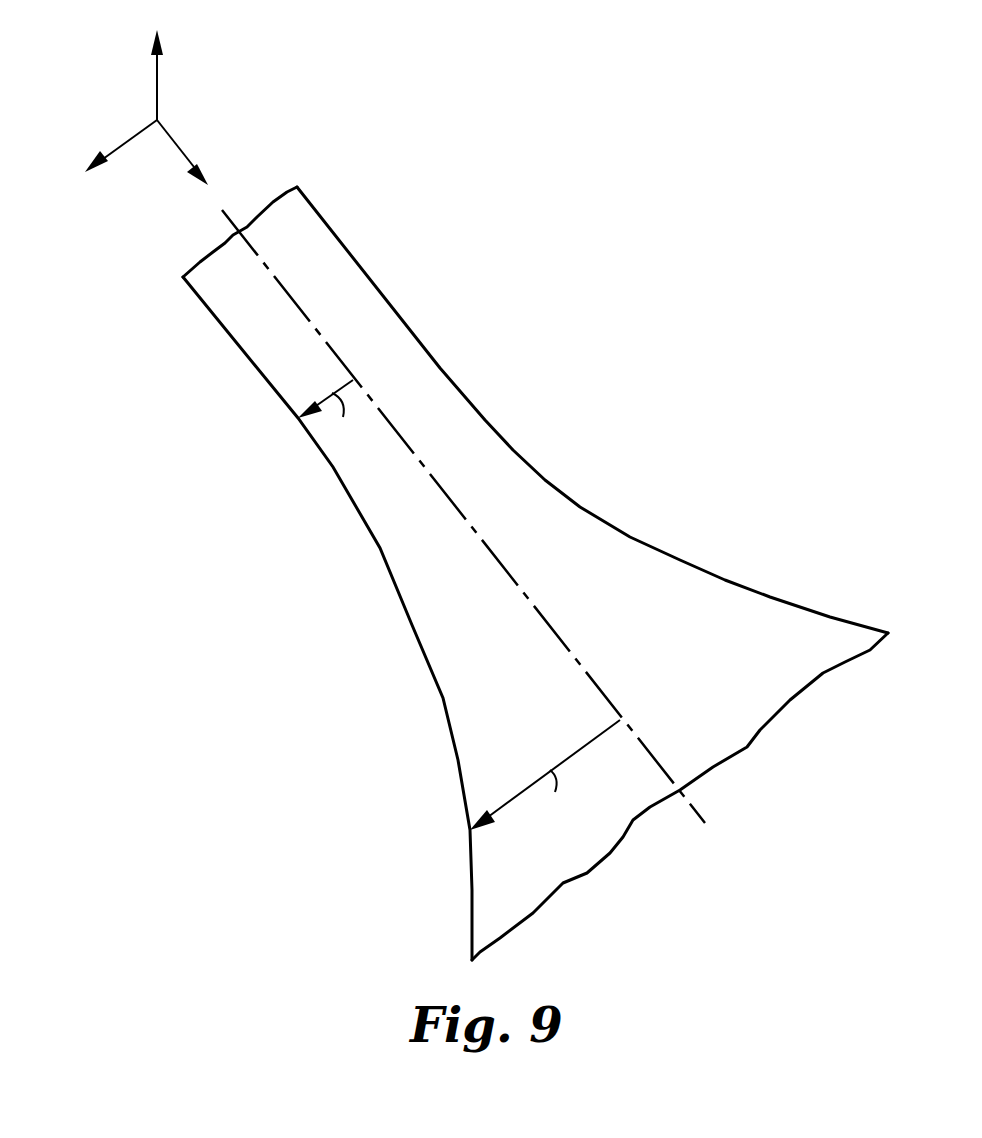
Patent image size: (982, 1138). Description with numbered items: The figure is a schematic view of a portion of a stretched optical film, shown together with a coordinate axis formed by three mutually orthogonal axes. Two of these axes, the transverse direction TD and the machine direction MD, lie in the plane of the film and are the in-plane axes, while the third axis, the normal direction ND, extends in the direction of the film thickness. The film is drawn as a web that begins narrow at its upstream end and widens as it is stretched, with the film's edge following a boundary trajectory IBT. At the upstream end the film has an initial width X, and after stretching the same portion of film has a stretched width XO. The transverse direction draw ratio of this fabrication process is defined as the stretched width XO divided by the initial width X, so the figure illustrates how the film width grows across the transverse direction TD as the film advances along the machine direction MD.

The normal direction ND is at (178, 73).
The transverse direction TD is at (104, 146).
The machine direction MD is at (202, 152).
The initial width X is at (325, 413).
The stretched width XO is at (545, 776).
The boundary trajectory IBT is at (380, 548).